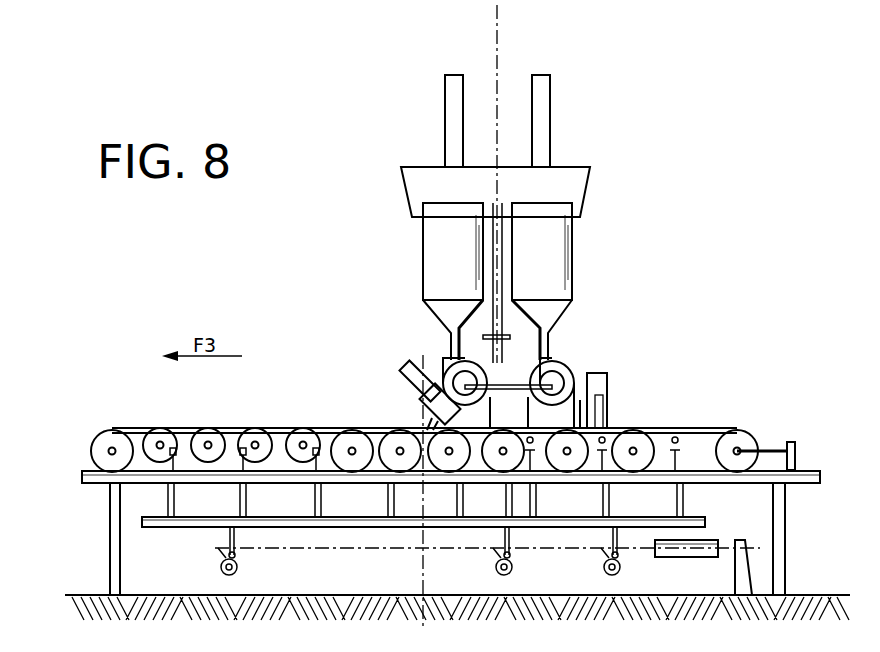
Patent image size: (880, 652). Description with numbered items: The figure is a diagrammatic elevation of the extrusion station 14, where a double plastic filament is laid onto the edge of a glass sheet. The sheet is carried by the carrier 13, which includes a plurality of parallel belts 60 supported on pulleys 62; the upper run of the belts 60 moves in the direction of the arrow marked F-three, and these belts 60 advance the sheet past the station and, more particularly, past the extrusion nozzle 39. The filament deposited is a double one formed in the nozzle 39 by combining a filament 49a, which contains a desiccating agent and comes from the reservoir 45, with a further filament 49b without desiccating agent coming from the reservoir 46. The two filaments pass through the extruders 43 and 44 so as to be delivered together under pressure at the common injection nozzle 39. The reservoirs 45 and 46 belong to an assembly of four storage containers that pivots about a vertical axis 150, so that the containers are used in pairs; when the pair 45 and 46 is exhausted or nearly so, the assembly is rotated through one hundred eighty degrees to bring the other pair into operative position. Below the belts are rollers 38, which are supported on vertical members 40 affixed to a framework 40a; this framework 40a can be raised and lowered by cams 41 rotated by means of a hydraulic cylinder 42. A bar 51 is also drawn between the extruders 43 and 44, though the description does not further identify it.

The carrier 13 is at (233, 416).
The extrusion station 14 is at (606, 288).
The rollers 38 is at (186, 432).
The extrusion nozzle 39 is at (418, 412).
The vertical members 40 is at (678, 500).
The framework 40a is at (696, 522).
The cams 41 is at (242, 567).
The hydraulic cylinder 42 is at (702, 556).
The extruder 43 is at (565, 365).
The extruder 44 is at (445, 361).
The reservoir 45 is at (553, 262).
The reservoir 46 is at (435, 253).
The filament 49a is at (548, 340).
The filament 49b is at (452, 337).
The connecting bar 51 is at (505, 392).
The belts 60 is at (279, 430).
The pulleys 62 is at (95, 452).
The vertical axis 150 is at (503, 55).